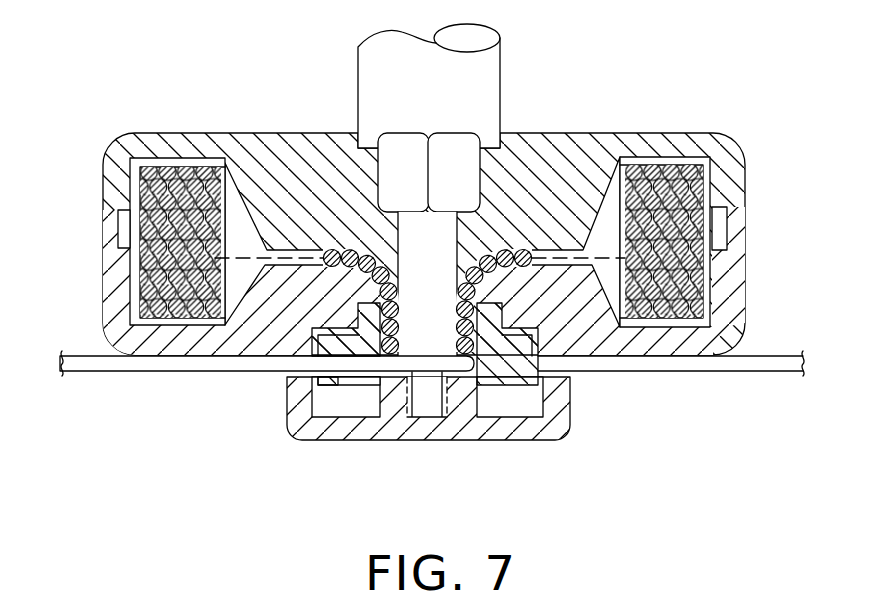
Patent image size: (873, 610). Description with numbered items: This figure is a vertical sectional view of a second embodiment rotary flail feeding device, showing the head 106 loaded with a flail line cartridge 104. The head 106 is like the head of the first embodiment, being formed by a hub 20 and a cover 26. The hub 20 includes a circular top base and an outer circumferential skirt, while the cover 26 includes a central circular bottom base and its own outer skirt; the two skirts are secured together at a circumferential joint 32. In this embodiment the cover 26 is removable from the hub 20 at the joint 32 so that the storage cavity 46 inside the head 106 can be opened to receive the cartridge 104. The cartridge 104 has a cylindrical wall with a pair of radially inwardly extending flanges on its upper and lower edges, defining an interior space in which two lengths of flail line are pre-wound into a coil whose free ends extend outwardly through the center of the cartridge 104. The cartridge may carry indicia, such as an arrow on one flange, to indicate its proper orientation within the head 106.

The hub 20 is at (430, 233).
The cover 26 is at (270, 344).
The circumferential joint 32 is at (745, 242).
The storage cavity 46 is at (124, 288).
The flail line cartridge 104 is at (664, 150).
The head 106 is at (738, 126).